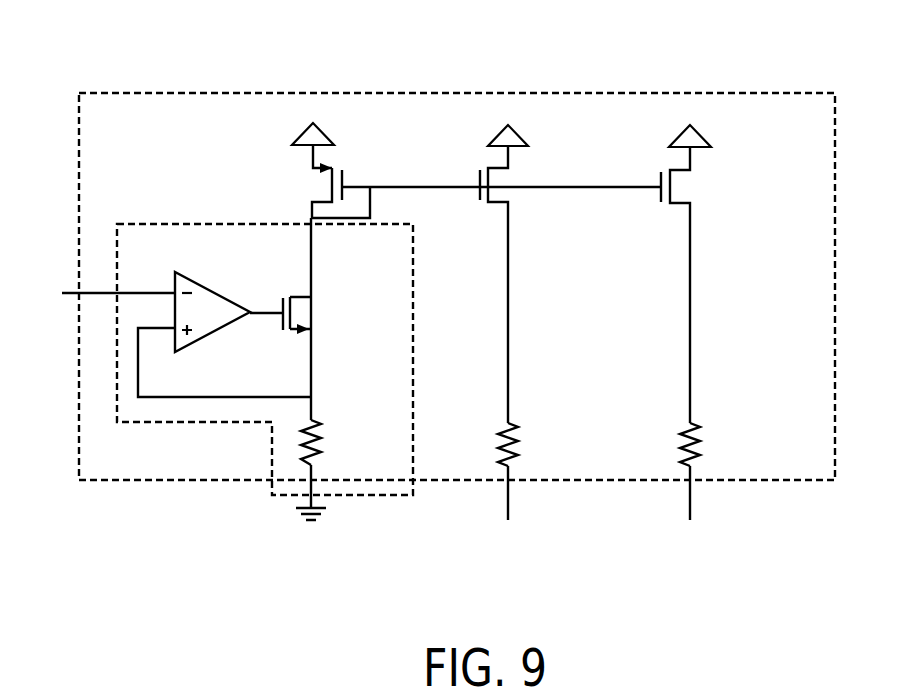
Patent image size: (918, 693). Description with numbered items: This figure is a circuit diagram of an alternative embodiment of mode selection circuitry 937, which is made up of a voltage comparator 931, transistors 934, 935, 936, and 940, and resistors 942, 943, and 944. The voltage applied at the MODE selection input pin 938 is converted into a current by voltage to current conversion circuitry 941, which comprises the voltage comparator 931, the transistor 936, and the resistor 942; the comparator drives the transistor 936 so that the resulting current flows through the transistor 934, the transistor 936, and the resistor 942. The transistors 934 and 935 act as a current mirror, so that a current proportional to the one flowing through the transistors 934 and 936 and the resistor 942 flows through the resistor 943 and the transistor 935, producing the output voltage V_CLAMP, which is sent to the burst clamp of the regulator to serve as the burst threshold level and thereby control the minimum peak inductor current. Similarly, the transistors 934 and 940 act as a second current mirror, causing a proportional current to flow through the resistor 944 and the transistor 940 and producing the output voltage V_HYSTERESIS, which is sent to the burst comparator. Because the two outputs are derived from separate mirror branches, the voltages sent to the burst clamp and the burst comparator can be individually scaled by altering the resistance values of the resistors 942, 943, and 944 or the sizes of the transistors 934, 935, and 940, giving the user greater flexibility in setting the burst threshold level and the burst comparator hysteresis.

The voltage comparator 931 is at (210, 290).
The transistor 934 is at (320, 159).
The transistor 935 is at (490, 160).
The transistor 936 is at (324, 312).
The mode selection circuitry 937 is at (645, 92).
The MODE selection input pin 938 is at (94, 279).
The transistor 940 is at (694, 185).
The voltage to current conversion circuitry 941 is at (185, 222).
The resistor 942 is at (324, 447).
The resistor 943 is at (526, 447).
The resistor 944 is at (710, 447).